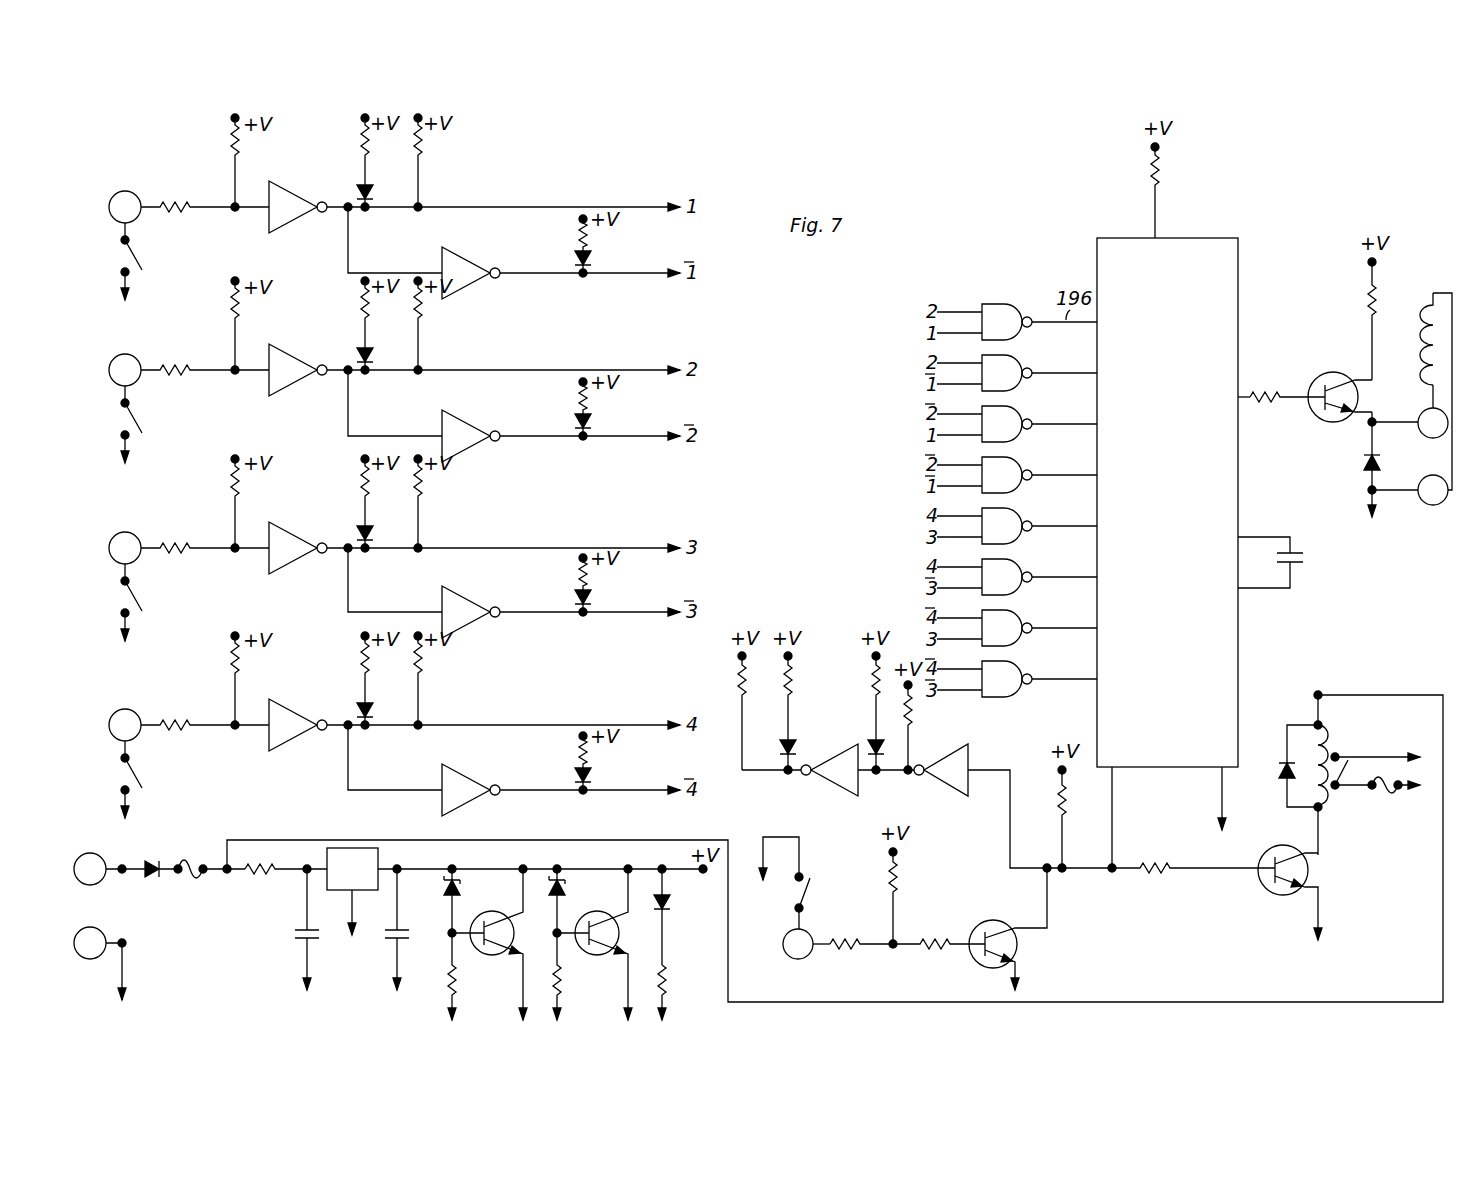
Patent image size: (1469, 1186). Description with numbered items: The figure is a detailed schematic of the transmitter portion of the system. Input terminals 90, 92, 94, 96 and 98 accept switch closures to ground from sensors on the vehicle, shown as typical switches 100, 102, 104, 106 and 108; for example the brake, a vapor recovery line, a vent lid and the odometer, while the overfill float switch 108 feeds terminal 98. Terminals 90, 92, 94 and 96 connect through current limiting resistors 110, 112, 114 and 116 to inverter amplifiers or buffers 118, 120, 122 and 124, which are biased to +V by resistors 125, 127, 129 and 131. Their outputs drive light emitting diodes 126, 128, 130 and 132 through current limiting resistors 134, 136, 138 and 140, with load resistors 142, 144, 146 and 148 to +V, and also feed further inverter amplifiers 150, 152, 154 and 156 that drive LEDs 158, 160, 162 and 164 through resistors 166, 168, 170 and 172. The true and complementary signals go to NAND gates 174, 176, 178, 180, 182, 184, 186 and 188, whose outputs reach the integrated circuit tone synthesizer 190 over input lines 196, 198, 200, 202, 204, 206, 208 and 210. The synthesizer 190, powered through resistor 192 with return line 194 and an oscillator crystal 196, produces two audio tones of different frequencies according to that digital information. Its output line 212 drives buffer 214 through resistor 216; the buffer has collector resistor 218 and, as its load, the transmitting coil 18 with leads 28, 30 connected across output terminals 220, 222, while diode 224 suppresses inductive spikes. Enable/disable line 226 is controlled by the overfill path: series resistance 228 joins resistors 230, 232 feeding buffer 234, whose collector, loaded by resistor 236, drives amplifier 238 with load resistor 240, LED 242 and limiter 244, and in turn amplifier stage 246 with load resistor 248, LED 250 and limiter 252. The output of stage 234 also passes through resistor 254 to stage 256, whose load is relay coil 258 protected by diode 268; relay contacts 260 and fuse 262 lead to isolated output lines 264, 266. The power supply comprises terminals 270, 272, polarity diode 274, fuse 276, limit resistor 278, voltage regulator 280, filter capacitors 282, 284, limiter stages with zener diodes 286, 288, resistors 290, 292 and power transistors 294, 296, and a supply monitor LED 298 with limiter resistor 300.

The transmitting coil 18 is at (1422, 324).
The lead 28 is at (1430, 395).
The lead 30 is at (1456, 298).
The input terminal 90 is at (122, 193).
The input terminal 92 is at (122, 356).
The input terminal 94 is at (122, 533).
The input terminal 96 is at (122, 710).
The input terminal 98 is at (804, 954).
The switch 100 is at (138, 254).
The switch 102 is at (138, 417).
The switch 104 is at (138, 594).
The switch 106 is at (138, 771).
The overfill float switch 108 is at (808, 876).
The current limiting resistor 110 is at (184, 200).
The current limiting resistor 112 is at (184, 363).
The current limiting resistor 114 is at (184, 541).
The current limiting resistor 116 is at (176, 732).
The inverter amplifier 118 is at (288, 187).
The inverter amplifier 120 is at (288, 350).
The inverter amplifier 122 is at (288, 525).
The inverter amplifier 124 is at (288, 704).
The biasing resistor 125 is at (231, 144).
The light emitting diode 126 is at (355, 188).
The biasing resistor 127 is at (231, 307).
The light emitting diode 128 is at (355, 351).
The biasing resistor 129 is at (232, 489).
The light emitting diode 130 is at (355, 528).
The biasing resistor 131 is at (222, 676).
The light emitting diode 132 is at (355, 706).
The current limiting resistor 134 is at (345, 146).
The current limiting resistor 136 is at (345, 309).
The current limiting resistor 138 is at (345, 487).
The current limiting resistor 140 is at (345, 664).
The load resistor 142 is at (428, 151).
The load resistor 144 is at (428, 314).
The load resistor 146 is at (428, 491).
The load resistor 148 is at (428, 656).
The inverter amplifier 150 is at (470, 258).
The inverter amplifier 152 is at (470, 421).
The inverter amplifier 154 is at (470, 596).
The inverter amplifier 156 is at (470, 774).
The light emitting diode 158 is at (600, 260).
The light emitting diode 160 is at (600, 423).
The light emitting diode 162 is at (600, 599).
The light emitting diode 164 is at (600, 777).
The current limiting resistor 166 is at (578, 238).
The current limiting resistor 168 is at (578, 401).
The current limiting resistor 170 is at (578, 578).
The current limiting resistor 172 is at (578, 756).
The NAND gate 174 is at (1012, 306).
The NAND gate 176 is at (1012, 357).
The NAND gate 178 is at (1012, 408).
The NAND gate 180 is at (1012, 459).
The NAND gate 182 is at (1012, 510).
The NAND gate 184 is at (1012, 561).
The NAND gate 186 is at (1012, 612).
The NAND gate 188 is at (1012, 663).
The integrated circuit tone synthesizer 190 is at (1167, 502).
The resistor 192 is at (1168, 180).
The negative supply line 194 is at (1217, 776).
The crystal 196 is at (1310, 560).
The input line 198 is at (1066, 371).
The input line 200 is at (1066, 422).
The input line 202 is at (1066, 473).
The input line 204 is at (1066, 524).
The input line 206 is at (1066, 575).
The input line 208 is at (1066, 626).
The input line 210 is at (1066, 677).
The output line 212 is at (1246, 397).
The buffer 214 is at (1345, 366).
The resistor 216 is at (1268, 408).
The collector resistor 218 is at (1362, 314).
The output terminal 220 is at (1436, 434).
The output terminal 222 is at (1431, 504).
The diode 224 is at (1364, 476).
The enable/disable line 226 is at (1116, 824).
The series resistance 228 is at (854, 934).
The resistor 230 is at (903, 891).
The resistor 232 is at (927, 934).
The buffer 234 is at (1020, 948).
The load resistor 236 is at (1051, 804).
The amplifier 238 is at (954, 798).
The load resistor 240 is at (916, 707).
The light emitting diode 242 is at (872, 741).
The current limiting resistor 244 is at (872, 690).
The amplifier stage 246 is at (846, 786).
The load resistor 248 is at (736, 685).
The light emitting diode 250 is at (796, 738).
The current limiter 252 is at (793, 670).
The resistor 254 is at (1158, 880).
The stage 256 is at (1308, 873).
The relay coil 258 is at (1322, 814).
The relay contacts 260 is at (1346, 750).
The fuse 262 is at (1372, 795).
The output line 264 is at (1390, 754).
The output line 266 is at (1399, 798).
The protective diode 268 is at (1280, 758).
The terminal 270 is at (94, 878).
The terminal 272 is at (92, 959).
The diode 274 is at (156, 859).
The fuse 276 is at (193, 877).
The limit resistor 278 is at (272, 875).
The integrated circuit voltage regulator 280 is at (379, 864).
The filter capacitor 282 is at (292, 938).
The filter capacitor 284 is at (404, 936).
The zener diode 286 is at (462, 887).
The zener diode 288 is at (567, 887).
The resistor 290 is at (462, 983).
The resistor 292 is at (567, 983).
The power transistor 294 is at (516, 933).
The power transistor 296 is at (621, 933).
The LED 298 is at (672, 900).
The limiter resistor 300 is at (672, 982).